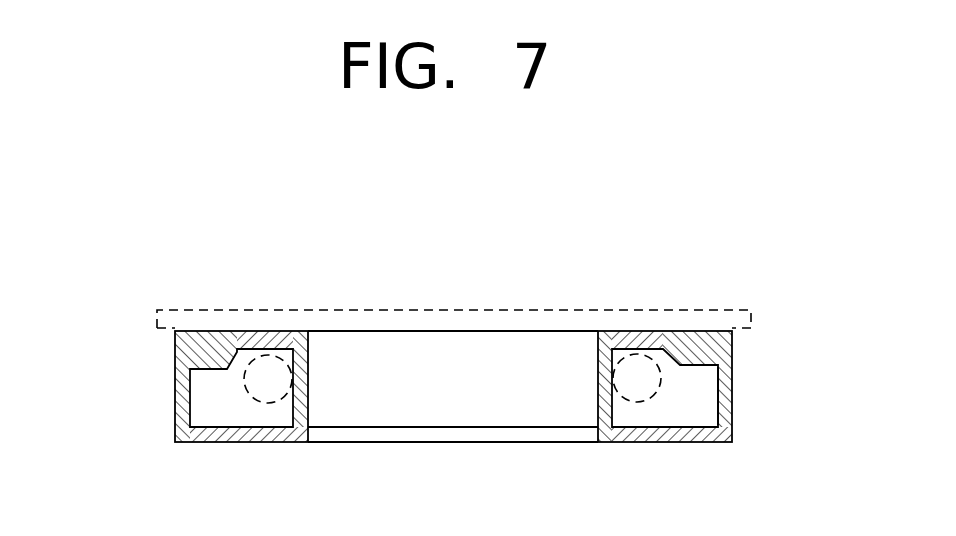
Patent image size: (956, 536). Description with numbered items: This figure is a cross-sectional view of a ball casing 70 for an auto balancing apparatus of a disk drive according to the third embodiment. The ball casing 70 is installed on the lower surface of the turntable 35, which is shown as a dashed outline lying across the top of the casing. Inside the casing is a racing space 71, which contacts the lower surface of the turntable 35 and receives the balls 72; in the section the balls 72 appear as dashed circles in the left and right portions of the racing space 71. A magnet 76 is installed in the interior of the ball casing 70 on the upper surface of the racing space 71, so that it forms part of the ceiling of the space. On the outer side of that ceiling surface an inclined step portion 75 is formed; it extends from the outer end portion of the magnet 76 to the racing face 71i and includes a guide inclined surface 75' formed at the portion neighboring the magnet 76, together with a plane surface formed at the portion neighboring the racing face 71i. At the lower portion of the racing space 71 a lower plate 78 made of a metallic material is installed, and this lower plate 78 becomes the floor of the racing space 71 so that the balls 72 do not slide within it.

The turntable 35 is at (155, 317).
The ball casing 70 is at (479, 383).
The racing space 71 is at (205, 397).
The racing face 71i is at (719, 392).
The balls 72 is at (265, 400).
The inclined step portion 75 is at (769, 374).
The guide inclined surface 75' is at (690, 412).
The magnet 76 is at (647, 332).
The lower plate 78 is at (640, 442).